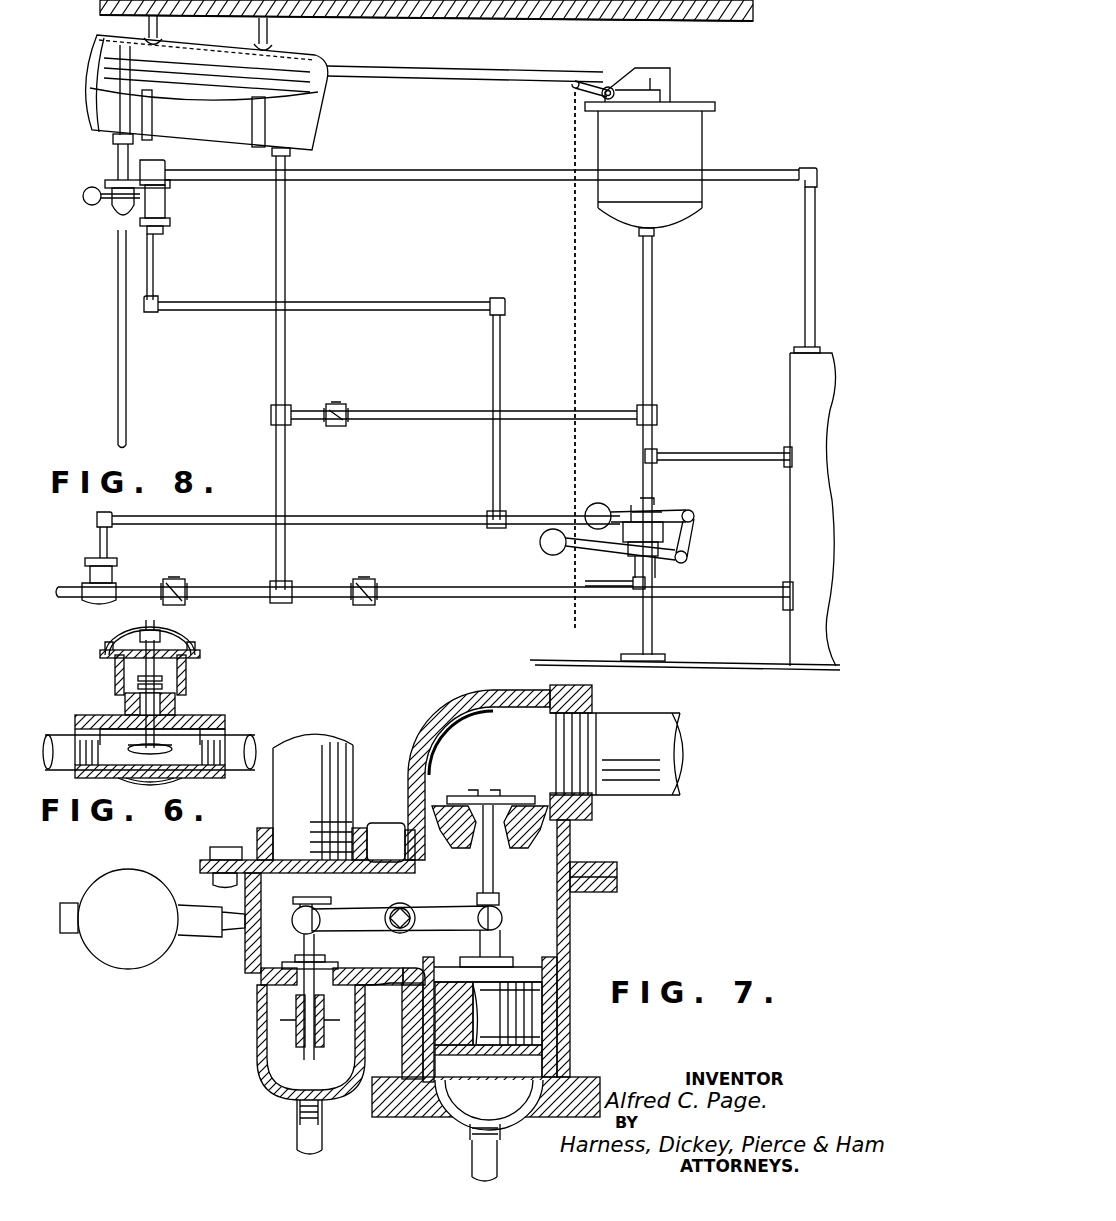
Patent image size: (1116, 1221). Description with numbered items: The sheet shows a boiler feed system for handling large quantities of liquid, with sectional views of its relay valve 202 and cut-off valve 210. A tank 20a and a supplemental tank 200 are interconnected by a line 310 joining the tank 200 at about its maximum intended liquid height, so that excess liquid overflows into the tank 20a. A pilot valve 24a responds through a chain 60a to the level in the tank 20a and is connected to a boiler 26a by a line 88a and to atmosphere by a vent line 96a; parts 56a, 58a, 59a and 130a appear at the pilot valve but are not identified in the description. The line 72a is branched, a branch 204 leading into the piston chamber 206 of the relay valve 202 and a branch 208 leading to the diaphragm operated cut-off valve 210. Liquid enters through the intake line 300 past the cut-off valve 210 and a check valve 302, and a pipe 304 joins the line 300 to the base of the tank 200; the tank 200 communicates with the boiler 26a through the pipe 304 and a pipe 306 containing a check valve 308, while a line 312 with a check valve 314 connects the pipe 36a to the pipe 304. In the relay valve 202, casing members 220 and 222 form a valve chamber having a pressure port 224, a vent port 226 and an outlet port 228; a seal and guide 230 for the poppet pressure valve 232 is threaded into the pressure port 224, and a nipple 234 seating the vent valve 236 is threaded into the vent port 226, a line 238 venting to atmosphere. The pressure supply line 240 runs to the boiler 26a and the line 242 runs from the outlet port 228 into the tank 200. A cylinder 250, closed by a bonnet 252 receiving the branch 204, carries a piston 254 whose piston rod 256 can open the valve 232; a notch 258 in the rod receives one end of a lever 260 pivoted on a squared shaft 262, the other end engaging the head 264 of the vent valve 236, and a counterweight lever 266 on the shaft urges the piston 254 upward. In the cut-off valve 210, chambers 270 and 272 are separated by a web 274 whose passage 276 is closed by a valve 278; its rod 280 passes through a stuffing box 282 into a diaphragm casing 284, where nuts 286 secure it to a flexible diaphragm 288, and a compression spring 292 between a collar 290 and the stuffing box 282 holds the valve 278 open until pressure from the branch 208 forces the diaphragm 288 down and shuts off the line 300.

In FIG. 8, the supplemental tank 200 is at (330, 128).
In FIG. 8, the line 310 is at (440, 68).
In FIG. 8, the tank 20a is at (690, 135).
In FIG. 8, the lever handle 56a is at (580, 88).
In FIG. 8, the chain 60a is at (578, 286).
In FIG. 8, the pressure supply line 240 is at (460, 178).
In FIG. 7, the pressure supply line 240 is at (668, 750).
In FIG. 8, the line 242 is at (116, 168).
In FIG. 7, the line 242 is at (352, 745).
In FIG. 8, the counterweight lever 266 is at (95, 207).
In FIG. 7, the counterweight lever 266 is at (184, 930).
In FIG. 8, the relay valve 202 is at (170, 237).
In FIG. 7, the relay valve 202 is at (581, 934).
In FIG. 8, the branch 204 is at (306, 300).
In FIG. 7, the branch 204 is at (470, 1150).
In FIG. 8, the pipe 304 is at (286, 365).
In FIG. 8, the line 312 is at (376, 412).
In FIG. 8, the check valve 314 is at (338, 425).
In FIG. 8, the line 238 is at (128, 412).
In FIG. 7, the line 238 is at (297, 1140).
In FIG. 8, the pipe 36a is at (650, 335).
In FIG. 8, the boiler 26a is at (790, 372).
In FIG. 8, the line 88a is at (685, 455).
In FIG. 8, the branch 208 is at (328, 516).
In FIG. 8, the cut-off valve 210 is at (118, 572).
In FIG. 6, the cut-off valve 210 is at (193, 698).
In FIG. 8, the intake line 300 is at (60, 590).
In FIG. 6, the intake line 300 is at (258, 750).
In FIG. 8, the check valve 302 is at (186, 584).
In FIG. 8, the pipe 306 is at (378, 586).
In FIG. 8, the check valve 308 is at (360, 606).
In FIG. 8, the line 72a is at (553, 516).
In FIG. 8, the pilot valve 24a is at (676, 519).
In FIG. 8, the float 58a is at (600, 552).
In FIG. 8, the valve 130a is at (620, 492).
In FIG. 8, the vent line 96a is at (620, 590).
In FIG. 8, the pipe 59a is at (565, 600).
In FIG. 6, the chamber 270 is at (150, 746).
In FIG. 6, the chamber 272 is at (171, 758).
In FIG. 6, the passage 276 is at (150, 790).
In FIG. 6, the valve 278 is at (180, 782).
In FIG. 6, the web 274 is at (190, 718).
In FIG. 6, the rod 280 is at (178, 700).
In FIG. 6, the collar 290 is at (115, 680).
In FIG. 6, the flexible diaphragm 288 is at (128, 642).
In FIG. 6, the nuts 286 is at (172, 645).
In FIG. 6, the diaphragm casing 284 is at (164, 632).
In FIG. 6, the piston chamber 206 is at (147, 625).
In FIG. 7, the piston chamber 206 is at (520, 1060).
In FIG. 6, the stuffing box 282 is at (165, 680).
In FIG. 6, the compression spring 292 is at (125, 702).
In FIG. 7, the outlet port 228 is at (368, 828).
In FIG. 7, the pressure port 224 is at (433, 796).
In FIG. 7, the poppet type pressure valve 232 is at (506, 795).
In FIG. 7, the seal and guide 230 is at (460, 845).
In FIG. 7, the piston rod 256 is at (497, 900).
In FIG. 7, the casing member 220 is at (600, 862).
In FIG. 7, the casing member 222 is at (572, 972).
In FIG. 7, the lever 260 is at (440, 900).
In FIG. 7, the notch 258 is at (502, 916).
In FIG. 7, the head 264 is at (322, 906).
In FIG. 7, the squared shaft 262 is at (396, 934).
In FIG. 7, the vent port 226 is at (258, 960).
In FIG. 7, the nipple 234 is at (262, 1040).
In FIG. 7, the poppet valve 236 is at (300, 1052).
In FIG. 7, the piston 254 is at (520, 1022).
In FIG. 7, the cylinder 250 is at (430, 1080).
In FIG. 7, the bonnet 252 is at (435, 1120).